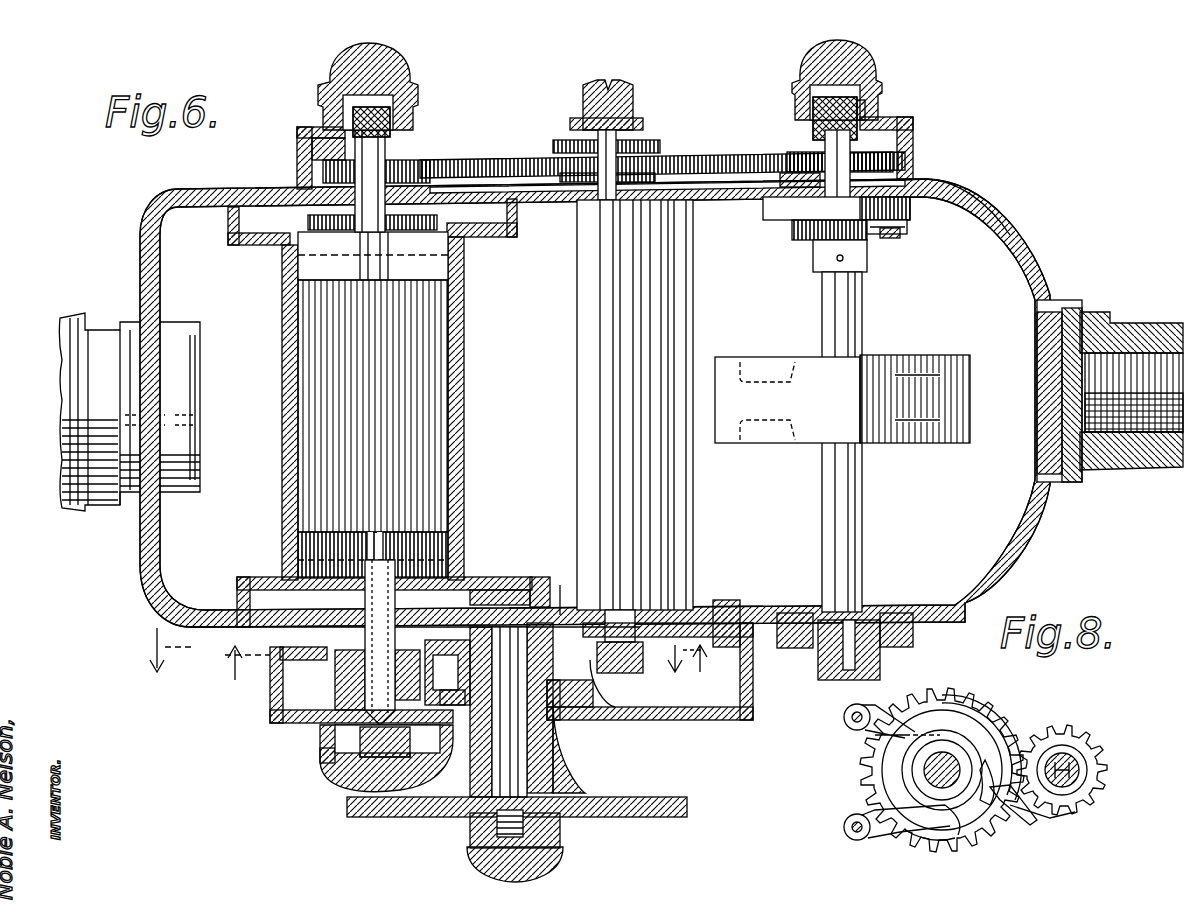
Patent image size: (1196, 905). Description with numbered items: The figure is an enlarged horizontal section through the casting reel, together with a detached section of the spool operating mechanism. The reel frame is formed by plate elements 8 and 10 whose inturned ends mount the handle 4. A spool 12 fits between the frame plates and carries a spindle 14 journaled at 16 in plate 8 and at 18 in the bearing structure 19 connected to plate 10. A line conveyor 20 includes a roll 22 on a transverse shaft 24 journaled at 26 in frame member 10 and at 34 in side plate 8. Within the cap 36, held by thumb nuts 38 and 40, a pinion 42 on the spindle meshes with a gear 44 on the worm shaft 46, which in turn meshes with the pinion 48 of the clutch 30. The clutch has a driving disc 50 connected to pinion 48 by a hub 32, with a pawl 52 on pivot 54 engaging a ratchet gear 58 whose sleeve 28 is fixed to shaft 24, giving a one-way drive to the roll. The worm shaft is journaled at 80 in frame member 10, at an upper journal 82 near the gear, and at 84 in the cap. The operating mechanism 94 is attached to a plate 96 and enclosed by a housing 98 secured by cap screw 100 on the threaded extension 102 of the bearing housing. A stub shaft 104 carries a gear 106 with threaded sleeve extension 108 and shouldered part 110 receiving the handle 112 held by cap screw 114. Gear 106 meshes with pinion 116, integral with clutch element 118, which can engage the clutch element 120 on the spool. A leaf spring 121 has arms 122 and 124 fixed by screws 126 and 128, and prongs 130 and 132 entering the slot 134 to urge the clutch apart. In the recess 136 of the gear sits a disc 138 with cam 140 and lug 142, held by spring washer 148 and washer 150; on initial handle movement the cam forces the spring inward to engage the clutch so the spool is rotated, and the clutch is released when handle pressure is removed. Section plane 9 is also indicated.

In FIG. 6, the handle 4 is at (80, 508).
In FIG. 6, the plate element 8 is at (966, 193).
In FIG. 6, the section line 9 is at (417, 665).
In FIG. 6, the plate element 10 is at (1020, 535).
In FIG. 6, the spool 12 is at (466, 335).
In FIG. 6, the spindle 14 is at (385, 372).
In FIG. 8, the spindle 14 is at (1080, 770).
In FIG. 6, the journal 16 is at (418, 115).
In FIG. 6, the journal 18 is at (335, 735).
In FIG. 6, the bearing structure 19 is at (315, 690).
In FIG. 6, the line conveyor 20 is at (924, 450).
In FIG. 6, the roll 22 is at (775, 440).
In FIG. 6, the shaft 24 is at (862, 515).
In FIG. 6, the journal 26 is at (882, 660).
In FIG. 6, the sleeve 28 is at (868, 262).
In FIG. 6, the clutch 30 is at (902, 225).
In FIG. 6, the hub 32 is at (882, 185).
In FIG. 6, the journal 34 is at (880, 110).
In FIG. 6, the cap 36 is at (490, 125).
In FIG. 6, the thumb nut 38 is at (396, 62).
In FIG. 6, the thumb nut 40 is at (860, 60).
In FIG. 6, the pinion 42 is at (300, 130).
In FIG. 6, the gear 44 is at (540, 126).
In FIG. 6, the shaft 46 is at (590, 195).
In FIG. 6, the pinion 48 is at (912, 130).
In FIG. 6, the driving disc 50 is at (763, 212).
In FIG. 6, the pawl 52 is at (922, 186).
In FIG. 6, the pivot 54 is at (892, 240).
In FIG. 6, the ratchet gear 58 is at (792, 232).
In FIG. 6, the journal 80 is at (618, 648).
In FIG. 6, the gear 82 is at (632, 125).
In FIG. 6, the journal 84 is at (615, 80).
In FIG. 6, the operating mechanism 94 is at (556, 748).
In FIG. 6, the plate 96 is at (208, 640).
In FIG. 6, the housing 98 is at (685, 715).
In FIG. 6, the cap screw 100 is at (336, 776).
In FIG. 6, the threaded extension 102 is at (320, 756).
In FIG. 6, the stub shaft 104 is at (560, 770).
In FIG. 8, the stub shaft 104 is at (925, 767).
In FIG. 6, the gear 106 is at (615, 708).
In FIG. 8, the gear 106 is at (960, 838).
In FIG. 6, the threaded sleeve extension 108 is at (553, 822).
In FIG. 6, the shouldered part 110 is at (478, 832).
In FIG. 6, the handle 112 is at (662, 818).
In FIG. 6, the cap screw 114 is at (470, 858).
In FIG. 6, the pinion 116 is at (335, 675).
In FIG. 8, the pinion 116 is at (1106, 757).
In FIG. 6, the clutch element 118 is at (482, 575).
In FIG. 6, the clutch element 120 is at (350, 585).
In FIG. 8, the leaf spring member 121 is at (968, 730).
In FIG. 8, the arm 122 is at (870, 732).
In FIG. 8, the arm 124 is at (888, 838).
In FIG. 8, the screw 126 is at (844, 718).
In FIG. 8, the screw 128 is at (844, 827).
In FIG. 8, the prong 130 is at (1070, 745).
In FIG. 8, the prong 132 is at (1080, 808).
In FIG. 6, the slot 134 is at (285, 640).
In FIG. 6, the recess 136 is at (592, 692).
In FIG. 6, the disc 138 is at (566, 605).
In FIG. 6, the cam 140 is at (468, 698).
In FIG. 8, the cam 140 is at (1020, 808).
In FIG. 8, the lug 142 is at (935, 845).
In FIG. 6, the spring washer 148 is at (450, 610).
In FIG. 8, the spring washer 148 is at (922, 700).
In FIG. 6, the washer 150 is at (540, 578).